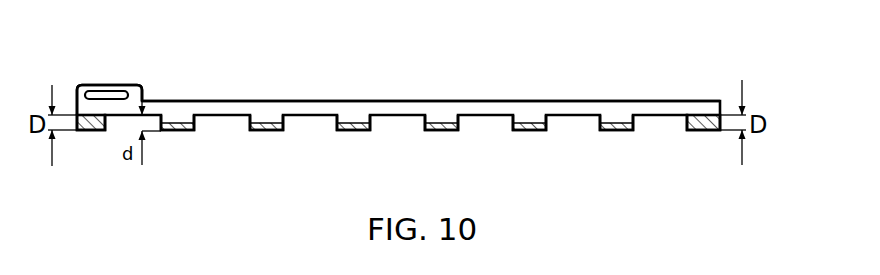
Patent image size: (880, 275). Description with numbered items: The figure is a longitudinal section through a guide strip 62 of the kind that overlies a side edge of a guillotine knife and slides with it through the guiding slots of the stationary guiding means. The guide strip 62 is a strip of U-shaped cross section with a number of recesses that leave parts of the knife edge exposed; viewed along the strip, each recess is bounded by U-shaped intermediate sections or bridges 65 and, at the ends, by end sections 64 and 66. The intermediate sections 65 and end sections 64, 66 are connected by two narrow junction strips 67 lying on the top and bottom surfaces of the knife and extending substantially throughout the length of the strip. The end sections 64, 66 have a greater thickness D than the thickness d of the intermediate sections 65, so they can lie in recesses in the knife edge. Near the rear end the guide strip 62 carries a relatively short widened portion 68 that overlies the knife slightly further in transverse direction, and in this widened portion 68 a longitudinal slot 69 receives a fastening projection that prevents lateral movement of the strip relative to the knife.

The guide strip 62 is at (595, 93).
The end section 64 is at (95, 128).
The intermediate sections 65 is at (257, 132).
The end section 66 is at (701, 131).
The junction strips 67 is at (503, 108).
The widened portion 68 is at (118, 86).
The slot 69 is at (98, 94).